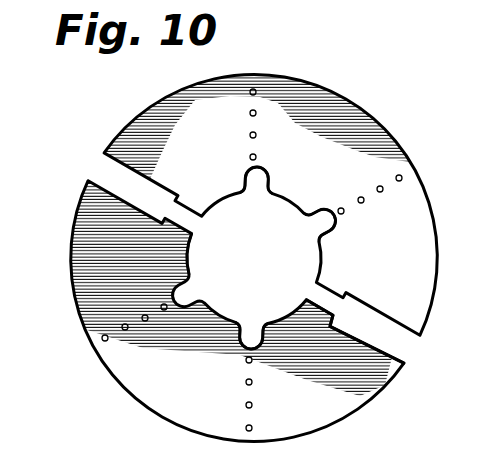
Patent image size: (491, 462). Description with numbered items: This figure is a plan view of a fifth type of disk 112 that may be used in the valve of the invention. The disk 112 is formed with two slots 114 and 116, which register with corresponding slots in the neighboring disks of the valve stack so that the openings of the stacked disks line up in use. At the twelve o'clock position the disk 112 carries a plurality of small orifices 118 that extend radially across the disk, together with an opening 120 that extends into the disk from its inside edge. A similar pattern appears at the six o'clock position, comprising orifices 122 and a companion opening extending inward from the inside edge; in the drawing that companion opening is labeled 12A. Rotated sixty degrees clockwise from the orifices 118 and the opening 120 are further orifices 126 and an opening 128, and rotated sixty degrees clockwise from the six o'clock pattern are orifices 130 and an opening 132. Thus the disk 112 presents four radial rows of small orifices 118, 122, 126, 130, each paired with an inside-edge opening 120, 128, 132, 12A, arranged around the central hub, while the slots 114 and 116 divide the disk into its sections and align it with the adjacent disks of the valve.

The disk 112 is at (357, 107).
The slot 114 is at (397, 368).
The slot 116 is at (91, 181).
The small orifices 118 is at (245, 87).
The opening 120 is at (250, 186).
The orifices 122 is at (242, 352).
The orifices 126 is at (410, 180).
The opening 128 is at (317, 226).
The orifices 130 is at (172, 312).
The opening 132 is at (200, 290).
The lobe slot 12A is at (250, 322).